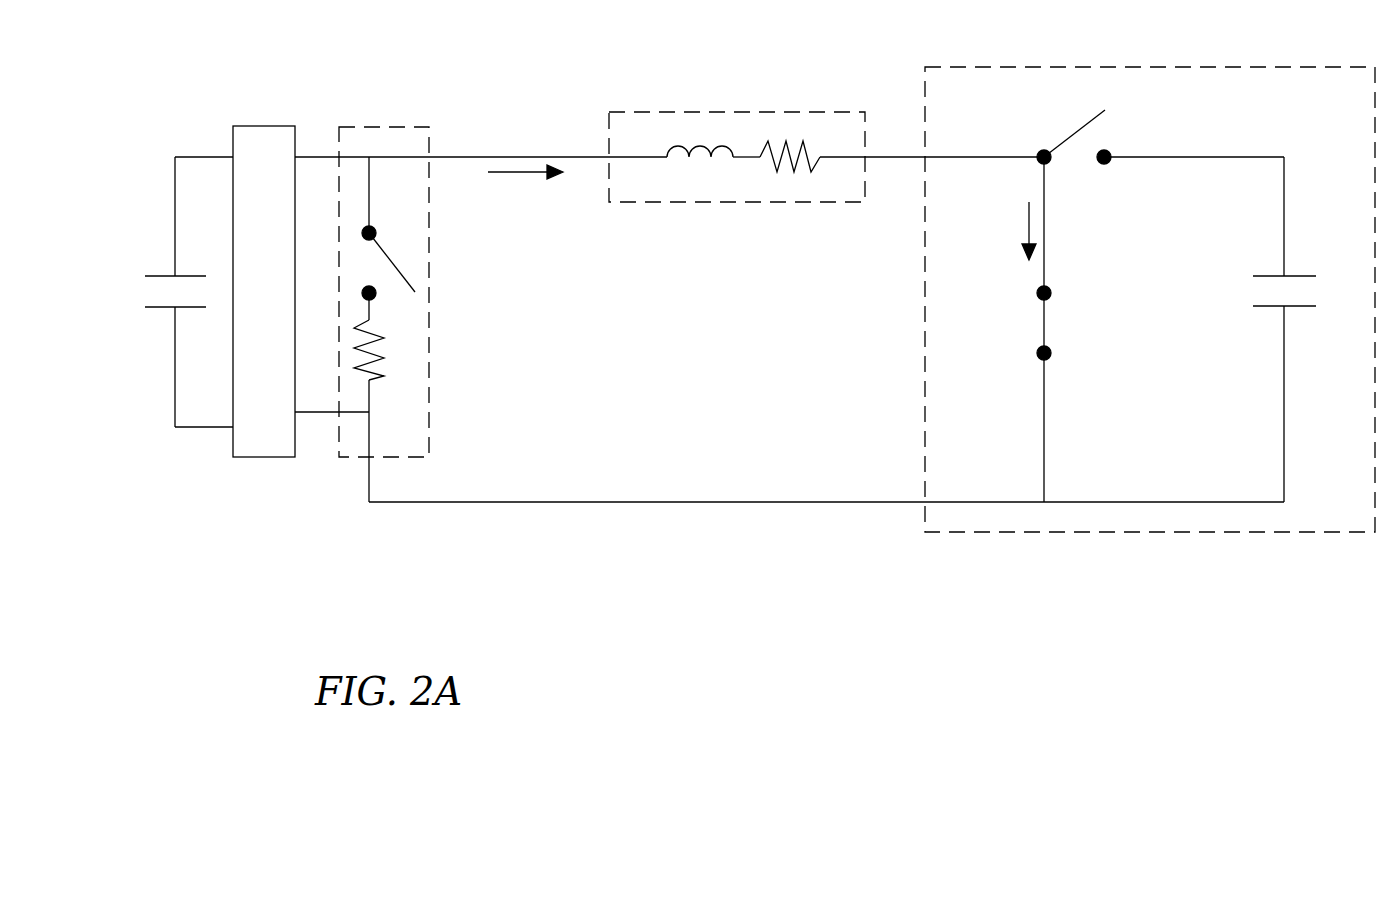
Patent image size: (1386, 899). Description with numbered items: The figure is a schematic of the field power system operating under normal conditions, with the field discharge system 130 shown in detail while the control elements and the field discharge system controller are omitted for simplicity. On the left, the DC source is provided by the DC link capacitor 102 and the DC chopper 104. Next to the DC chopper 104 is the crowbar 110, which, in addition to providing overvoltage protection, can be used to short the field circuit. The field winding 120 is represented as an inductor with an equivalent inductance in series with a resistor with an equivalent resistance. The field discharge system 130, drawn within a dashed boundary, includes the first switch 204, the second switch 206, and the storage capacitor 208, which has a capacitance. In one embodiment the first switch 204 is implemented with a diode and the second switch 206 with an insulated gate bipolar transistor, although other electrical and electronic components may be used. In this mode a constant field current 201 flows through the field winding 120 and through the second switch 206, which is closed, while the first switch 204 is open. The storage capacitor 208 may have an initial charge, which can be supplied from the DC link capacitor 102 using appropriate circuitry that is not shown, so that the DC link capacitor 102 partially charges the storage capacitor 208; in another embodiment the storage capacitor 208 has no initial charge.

The DC link capacitor 102 is at (176, 292).
The DC chopper 104 is at (264, 277).
The crowbar 110 is at (400, 271).
The field winding 120 is at (737, 164).
The field discharge system 130 is at (1150, 303).
The field current 201 is at (762, 212).
The switch SW1 204 is at (1160, 179).
The switch SW2 206 is at (1047, 258).
The storage capacitor 208 is at (1295, 303).